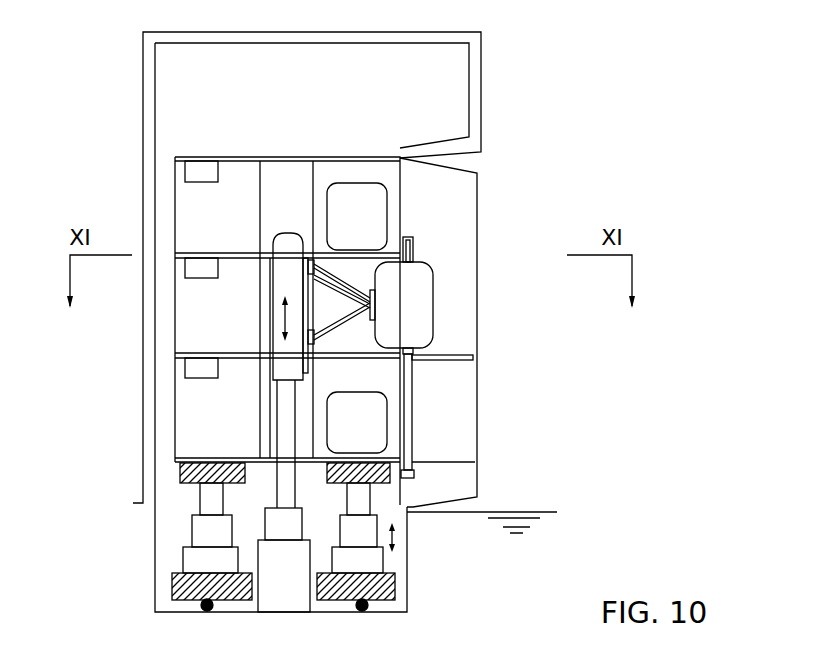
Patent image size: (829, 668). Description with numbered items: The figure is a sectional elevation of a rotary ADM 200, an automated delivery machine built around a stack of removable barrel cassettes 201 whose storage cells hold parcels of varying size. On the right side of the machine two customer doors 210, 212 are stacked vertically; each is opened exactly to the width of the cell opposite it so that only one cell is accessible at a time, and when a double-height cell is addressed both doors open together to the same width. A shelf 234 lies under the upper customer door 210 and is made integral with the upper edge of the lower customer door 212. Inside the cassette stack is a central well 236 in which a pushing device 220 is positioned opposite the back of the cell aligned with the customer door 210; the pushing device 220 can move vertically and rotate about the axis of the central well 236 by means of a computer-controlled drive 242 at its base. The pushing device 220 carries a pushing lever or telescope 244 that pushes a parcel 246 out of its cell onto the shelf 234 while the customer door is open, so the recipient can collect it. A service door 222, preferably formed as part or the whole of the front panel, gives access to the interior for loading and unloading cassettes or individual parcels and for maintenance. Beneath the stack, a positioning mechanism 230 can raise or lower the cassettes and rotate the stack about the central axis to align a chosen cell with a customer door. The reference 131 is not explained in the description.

The rotary ADM 200 is at (516, 80).
The removable barrel cassettes 201 is at (236, 157).
The central well 236 is at (283, 168).
The pushing device 220 is at (273, 238).
The service door 222 is at (477, 207).
The customer door 210 is at (415, 253).
The parcel 246 is at (387, 320).
The pushing lever or telescope 244 is at (332, 333).
The shelf 234 is at (440, 355).
The customer door 212 is at (410, 417).
The tool compartments 131 is at (175, 413).
The computer-controlled drive 242 is at (265, 595).
The positioning mechanism 230 is at (393, 580).